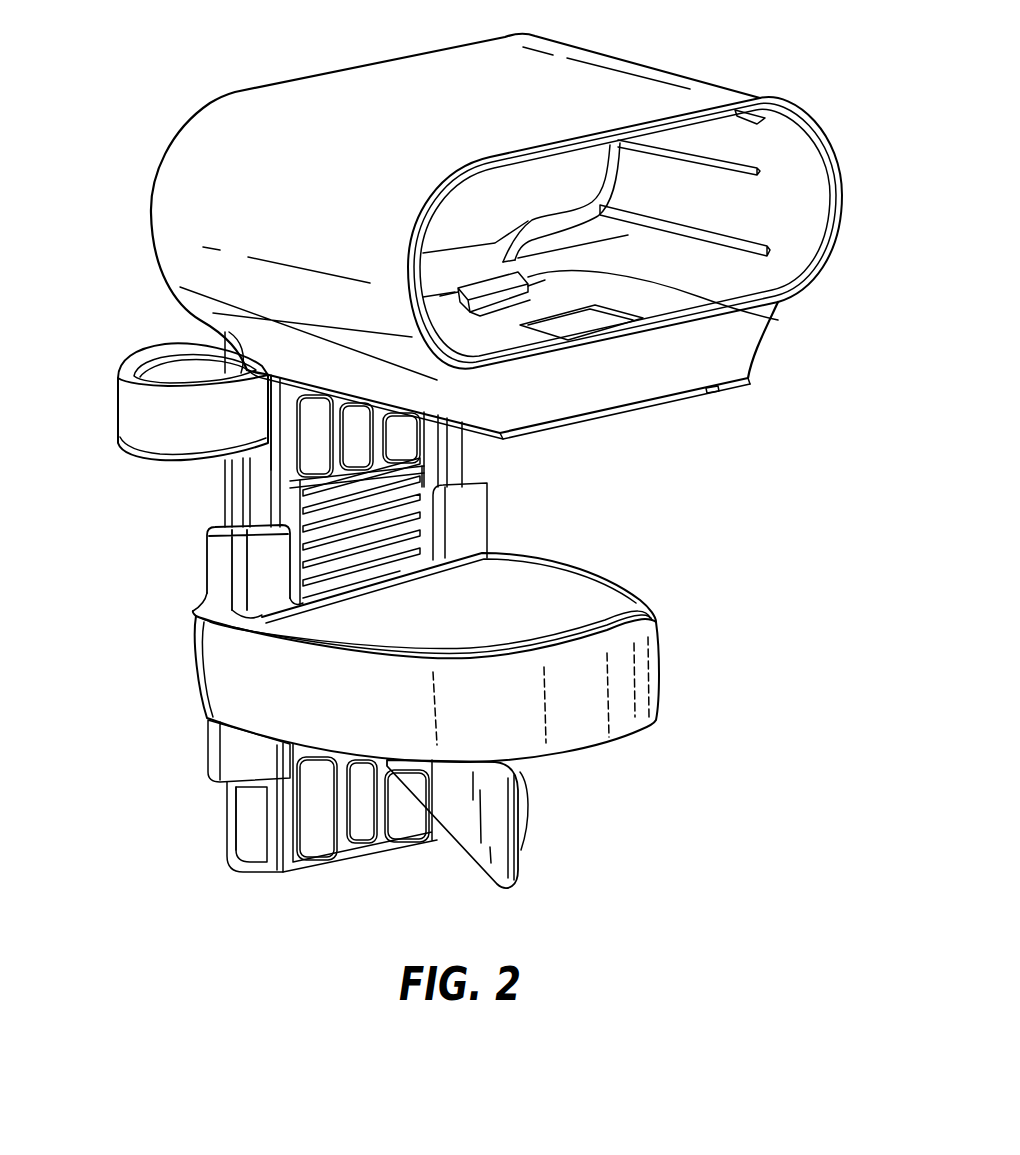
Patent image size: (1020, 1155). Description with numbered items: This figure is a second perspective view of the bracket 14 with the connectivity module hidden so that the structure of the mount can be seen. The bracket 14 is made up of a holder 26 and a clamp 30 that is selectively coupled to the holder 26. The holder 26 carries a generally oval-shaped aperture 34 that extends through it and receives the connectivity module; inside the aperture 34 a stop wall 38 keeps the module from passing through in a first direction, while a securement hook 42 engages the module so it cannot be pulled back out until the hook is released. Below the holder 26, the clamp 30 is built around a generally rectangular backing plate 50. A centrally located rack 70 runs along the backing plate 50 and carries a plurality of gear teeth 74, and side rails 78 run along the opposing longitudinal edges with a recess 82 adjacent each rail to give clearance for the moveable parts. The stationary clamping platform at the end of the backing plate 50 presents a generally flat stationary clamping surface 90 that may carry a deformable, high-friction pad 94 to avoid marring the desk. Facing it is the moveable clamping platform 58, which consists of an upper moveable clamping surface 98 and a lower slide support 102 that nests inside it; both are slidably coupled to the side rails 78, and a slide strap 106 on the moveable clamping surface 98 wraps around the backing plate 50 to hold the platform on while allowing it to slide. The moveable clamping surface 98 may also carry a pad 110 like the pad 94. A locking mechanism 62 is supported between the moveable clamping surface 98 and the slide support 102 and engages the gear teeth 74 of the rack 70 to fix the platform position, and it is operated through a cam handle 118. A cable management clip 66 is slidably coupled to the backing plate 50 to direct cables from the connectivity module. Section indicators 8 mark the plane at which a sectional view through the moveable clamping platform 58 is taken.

The bracket 14 is at (120, 93).
The holder 26 is at (592, 88).
The aperture 34 is at (800, 185).
The stop wall 38 is at (557, 235).
The securement hook 42 is at (690, 296).
The pad 94 is at (600, 414).
The stationary clamping surface 90 is at (705, 401).
The clamp 30 is at (753, 556).
The cable management clip 66 is at (132, 410).
The rack 70 is at (298, 513).
The gear teeth 74 is at (433, 488).
The side rails 78 is at (423, 458).
The section line 8- 8 is at (340, 597).
The slide strap 106 is at (222, 567).
The moveable clamping surface 98 is at (280, 647).
The pad 110 is at (603, 592).
The moveable clamping platform 58 is at (665, 671).
The slide support 102 is at (218, 762).
The backing plate 50 is at (355, 828).
The recess 82 is at (255, 830).
The cam handle 118 is at (518, 836).
The locking mechanism 62 is at (466, 872).